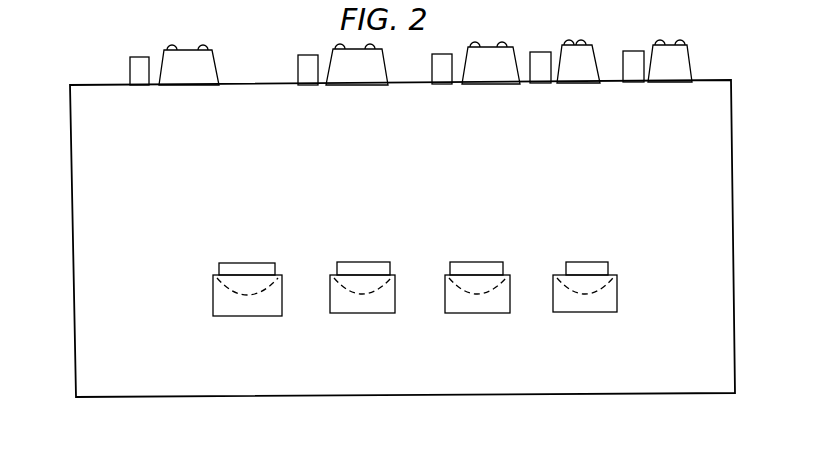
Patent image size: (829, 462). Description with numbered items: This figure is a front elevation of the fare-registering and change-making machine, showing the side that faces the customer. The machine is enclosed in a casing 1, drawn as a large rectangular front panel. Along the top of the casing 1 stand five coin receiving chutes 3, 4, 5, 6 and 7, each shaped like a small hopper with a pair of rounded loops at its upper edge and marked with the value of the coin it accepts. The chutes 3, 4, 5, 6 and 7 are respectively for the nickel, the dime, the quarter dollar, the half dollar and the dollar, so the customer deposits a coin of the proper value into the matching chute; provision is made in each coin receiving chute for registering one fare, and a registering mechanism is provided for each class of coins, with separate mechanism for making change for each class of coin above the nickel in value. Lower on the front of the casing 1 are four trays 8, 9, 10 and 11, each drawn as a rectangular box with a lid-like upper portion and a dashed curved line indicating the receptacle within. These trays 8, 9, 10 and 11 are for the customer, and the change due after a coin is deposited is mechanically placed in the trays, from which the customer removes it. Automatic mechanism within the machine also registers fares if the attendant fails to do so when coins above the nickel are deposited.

The casing 1 is at (723, 182).
The coin receiving chute 3 is at (687, 49).
The coin receiving chute 4 is at (594, 45).
The coin receiving chute 5 is at (517, 50).
The coin receiving chute 6 is at (380, 65).
The coin receiving chute 7 is at (210, 70).
The tray 8 is at (608, 263).
The tray 9 is at (503, 263).
The tray 10 is at (390, 263).
The tray 11 is at (276, 267).